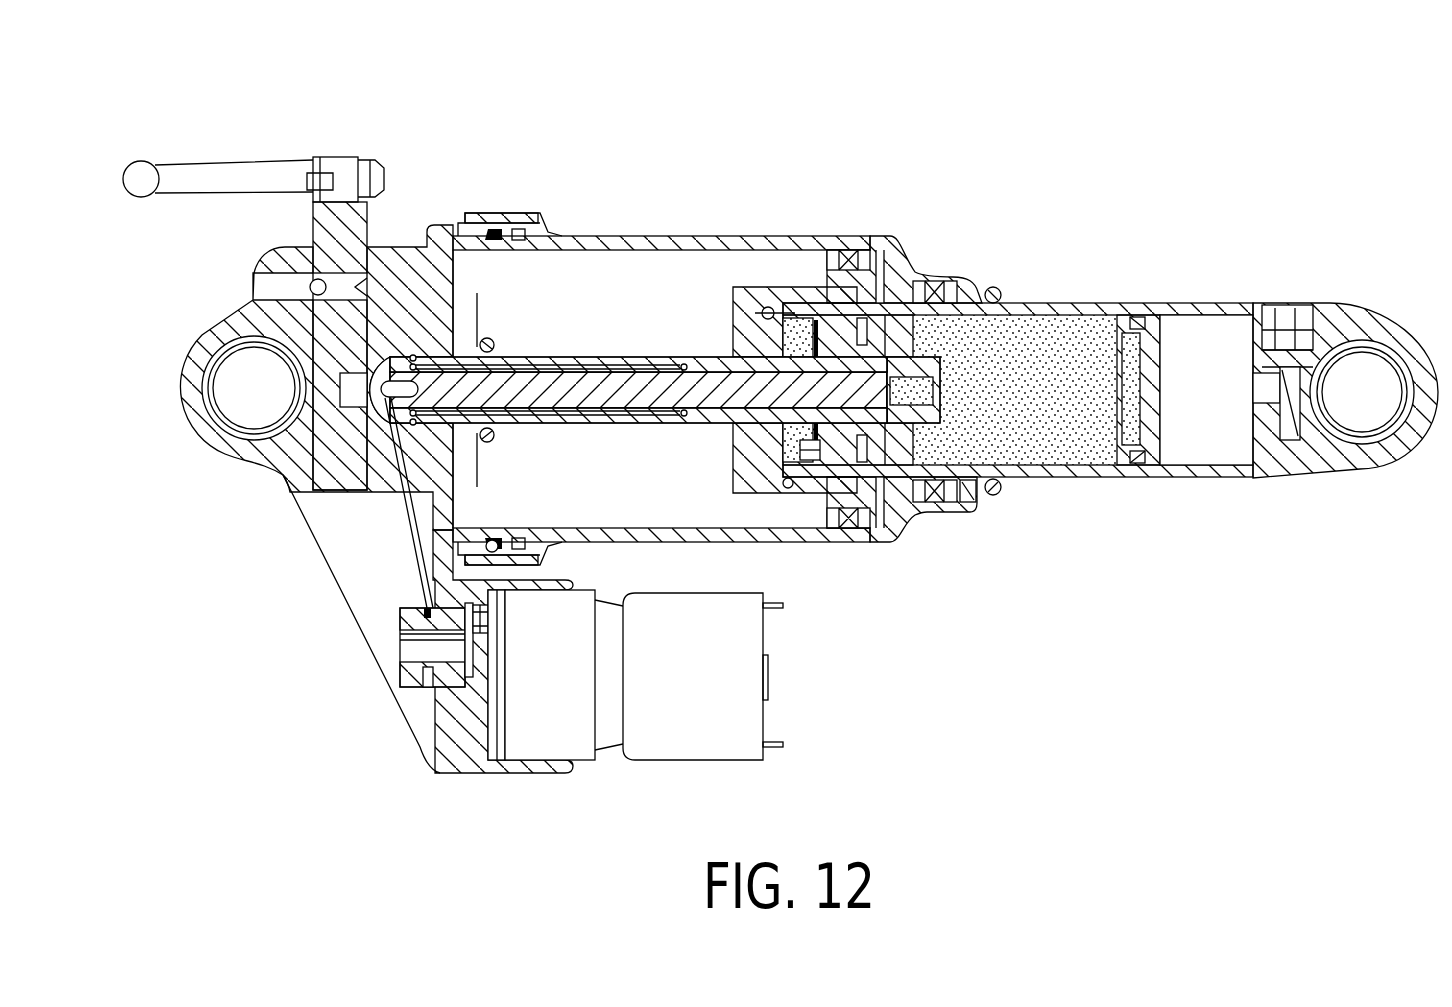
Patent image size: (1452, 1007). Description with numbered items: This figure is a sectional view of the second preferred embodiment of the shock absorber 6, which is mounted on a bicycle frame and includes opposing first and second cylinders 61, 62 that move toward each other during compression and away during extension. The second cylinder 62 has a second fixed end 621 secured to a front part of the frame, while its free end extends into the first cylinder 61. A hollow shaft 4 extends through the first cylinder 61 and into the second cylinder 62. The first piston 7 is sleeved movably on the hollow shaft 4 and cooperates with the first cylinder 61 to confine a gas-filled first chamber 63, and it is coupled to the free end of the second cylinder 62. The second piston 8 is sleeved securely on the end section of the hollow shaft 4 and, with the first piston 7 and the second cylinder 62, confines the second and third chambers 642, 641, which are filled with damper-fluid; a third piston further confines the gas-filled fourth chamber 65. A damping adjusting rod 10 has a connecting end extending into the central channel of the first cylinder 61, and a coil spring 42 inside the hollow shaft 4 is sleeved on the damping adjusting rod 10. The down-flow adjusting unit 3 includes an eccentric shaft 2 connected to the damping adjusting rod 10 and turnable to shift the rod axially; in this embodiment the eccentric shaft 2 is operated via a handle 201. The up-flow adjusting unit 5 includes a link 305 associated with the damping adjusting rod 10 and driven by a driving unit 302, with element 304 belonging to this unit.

The eccentric shaft 2 is at (306, 478).
The down-flow adjusting unit 3 is at (286, 228).
The handle 201 is at (208, 173).
The hollow shaft 4 is at (578, 338).
The up-flow adjusting unit 5 is at (344, 673).
The shock absorber 6 is at (683, 224).
The first piston 7 is at (753, 269).
The second piston 8 is at (937, 318).
The damping adjusting rod 10 is at (700, 436).
The coil spring 42 is at (690, 373).
The first cylinder 61 is at (627, 236).
The second cylinder 62 is at (1053, 308).
The first chamber 63 is at (556, 272).
The fourth chamber 65 is at (1205, 333).
The driving unit 302 is at (697, 737).
The valve block 304 is at (432, 655).
The link 305 is at (413, 572).
The second fixed end 621 is at (1370, 327).
The third chamber 641 is at (1050, 437).
The second chamber 642 is at (787, 447).